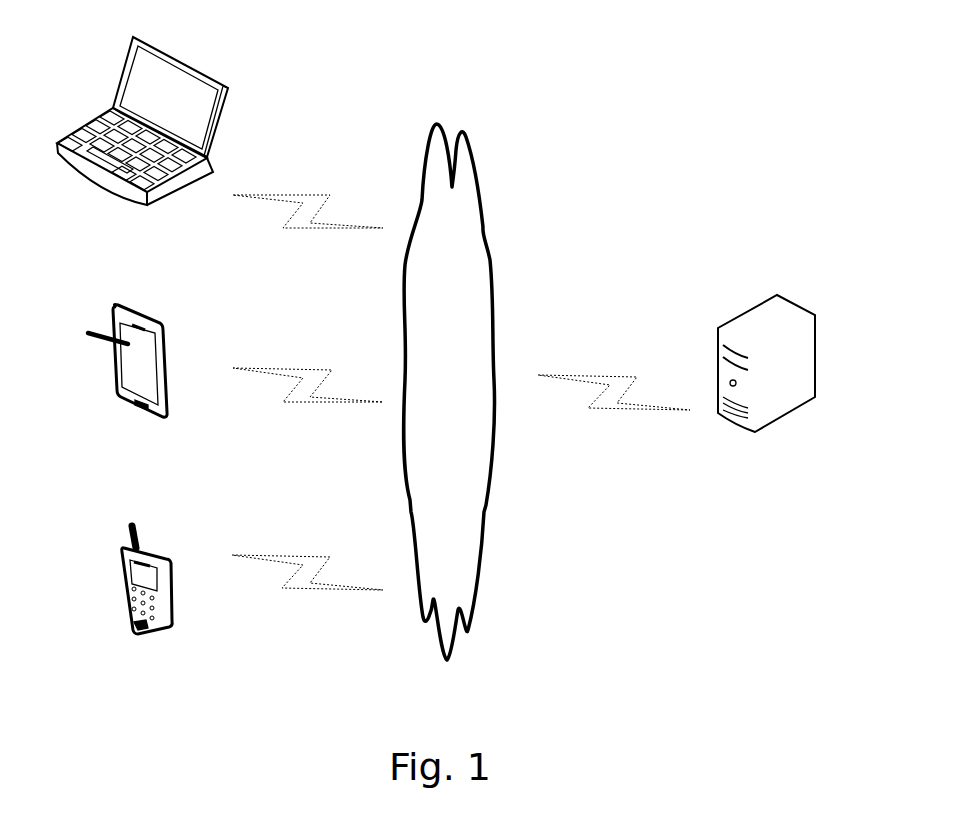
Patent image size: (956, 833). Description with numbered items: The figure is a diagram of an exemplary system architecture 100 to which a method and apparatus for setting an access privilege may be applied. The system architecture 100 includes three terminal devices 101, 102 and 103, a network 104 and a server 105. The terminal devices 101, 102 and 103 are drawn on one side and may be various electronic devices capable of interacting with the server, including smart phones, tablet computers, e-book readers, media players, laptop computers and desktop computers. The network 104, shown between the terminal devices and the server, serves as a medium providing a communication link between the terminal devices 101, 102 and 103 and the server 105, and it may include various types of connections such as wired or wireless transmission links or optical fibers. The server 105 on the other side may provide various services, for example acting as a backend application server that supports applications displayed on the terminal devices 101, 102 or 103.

The system architecture 100 is at (716, 26).
The terminal device 101 is at (147, 603).
The terminal device 102 is at (127, 382).
The terminal device 103 is at (142, 142).
The network 104 is at (449, 392).
The server 105 is at (766, 387).